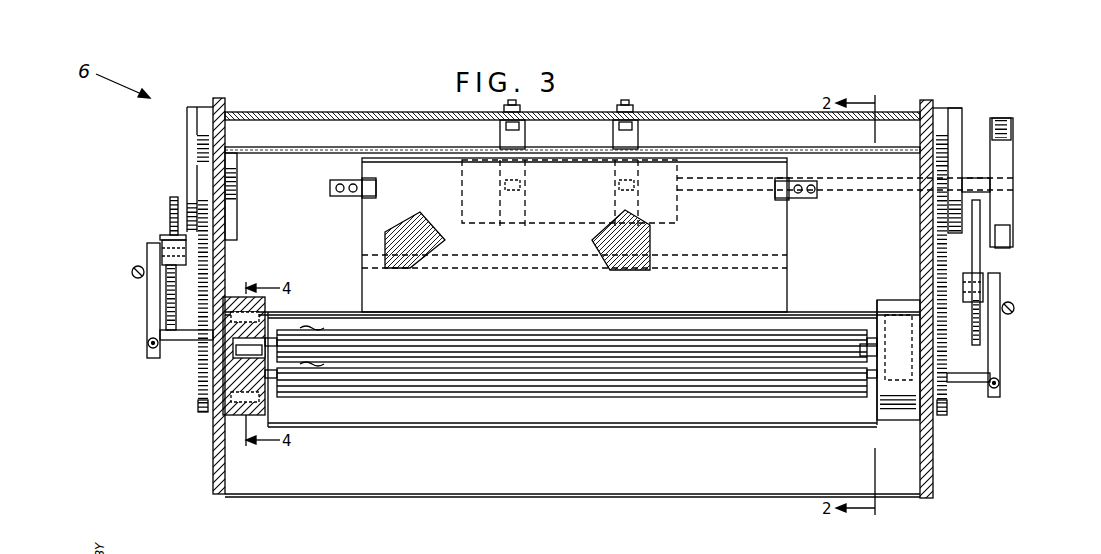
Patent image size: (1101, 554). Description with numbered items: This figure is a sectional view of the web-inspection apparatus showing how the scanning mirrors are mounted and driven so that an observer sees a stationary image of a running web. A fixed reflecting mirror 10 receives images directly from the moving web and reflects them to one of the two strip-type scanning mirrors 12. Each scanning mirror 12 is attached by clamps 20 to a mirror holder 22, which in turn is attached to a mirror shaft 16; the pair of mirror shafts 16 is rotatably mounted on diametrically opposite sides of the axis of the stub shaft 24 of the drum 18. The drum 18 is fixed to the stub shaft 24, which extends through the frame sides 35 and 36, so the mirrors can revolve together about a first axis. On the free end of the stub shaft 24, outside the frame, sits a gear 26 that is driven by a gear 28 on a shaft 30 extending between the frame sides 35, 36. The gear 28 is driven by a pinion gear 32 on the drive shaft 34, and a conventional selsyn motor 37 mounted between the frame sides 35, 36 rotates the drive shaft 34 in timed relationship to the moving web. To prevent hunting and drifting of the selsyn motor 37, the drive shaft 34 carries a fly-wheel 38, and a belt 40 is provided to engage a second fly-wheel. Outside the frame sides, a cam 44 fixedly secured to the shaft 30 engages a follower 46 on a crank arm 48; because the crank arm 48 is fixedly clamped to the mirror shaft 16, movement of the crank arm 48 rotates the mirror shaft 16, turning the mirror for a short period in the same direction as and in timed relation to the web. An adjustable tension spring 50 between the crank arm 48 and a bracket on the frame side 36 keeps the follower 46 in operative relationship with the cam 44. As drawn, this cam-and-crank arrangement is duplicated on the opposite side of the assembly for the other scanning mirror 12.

The fixed reflecting mirror 10 is at (362, 212).
The scanning mirror 12 is at (443, 358).
The mirror shaft 16 is at (266, 340).
The drum 18 is at (235, 380).
The clamp 20 is at (332, 362).
The mirror holder 22 is at (572, 368).
The stub shaft 24 is at (236, 351).
The gear 26 is at (200, 402).
The gear 28 is at (200, 312).
The shaft 30 is at (292, 262).
The pinion gear 32 is at (943, 160).
The drive shaft 34 is at (875, 188).
The frame side 35 is at (926, 478).
The frame side 36 is at (215, 452).
The selsyn motor 37 is at (462, 205).
The fly-wheel 38 is at (1010, 158).
The belt 40 is at (1005, 238).
The cam 44 is at (168, 297).
The follower 46 is at (162, 256).
The crank arm 48 is at (148, 333).
The adjustable tension spring 50 is at (133, 276).